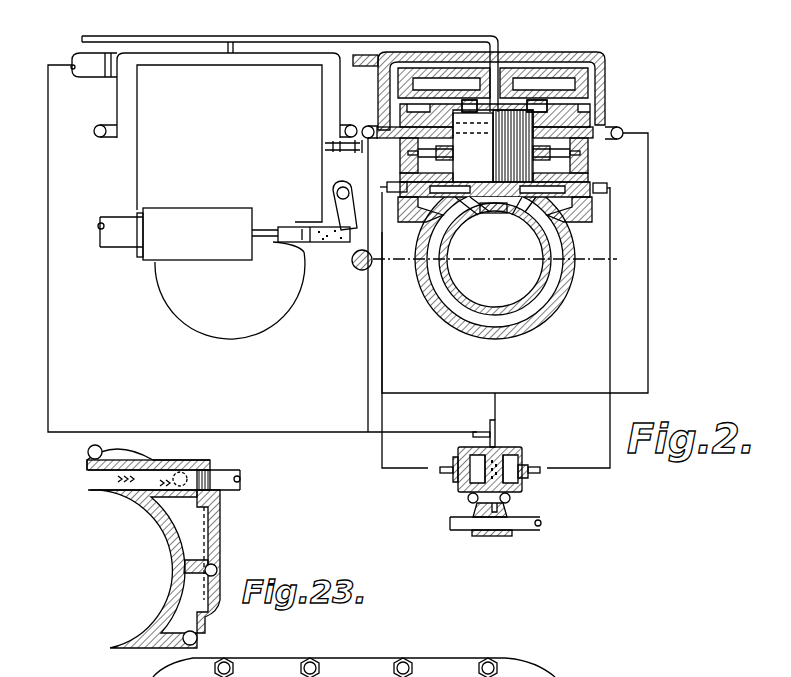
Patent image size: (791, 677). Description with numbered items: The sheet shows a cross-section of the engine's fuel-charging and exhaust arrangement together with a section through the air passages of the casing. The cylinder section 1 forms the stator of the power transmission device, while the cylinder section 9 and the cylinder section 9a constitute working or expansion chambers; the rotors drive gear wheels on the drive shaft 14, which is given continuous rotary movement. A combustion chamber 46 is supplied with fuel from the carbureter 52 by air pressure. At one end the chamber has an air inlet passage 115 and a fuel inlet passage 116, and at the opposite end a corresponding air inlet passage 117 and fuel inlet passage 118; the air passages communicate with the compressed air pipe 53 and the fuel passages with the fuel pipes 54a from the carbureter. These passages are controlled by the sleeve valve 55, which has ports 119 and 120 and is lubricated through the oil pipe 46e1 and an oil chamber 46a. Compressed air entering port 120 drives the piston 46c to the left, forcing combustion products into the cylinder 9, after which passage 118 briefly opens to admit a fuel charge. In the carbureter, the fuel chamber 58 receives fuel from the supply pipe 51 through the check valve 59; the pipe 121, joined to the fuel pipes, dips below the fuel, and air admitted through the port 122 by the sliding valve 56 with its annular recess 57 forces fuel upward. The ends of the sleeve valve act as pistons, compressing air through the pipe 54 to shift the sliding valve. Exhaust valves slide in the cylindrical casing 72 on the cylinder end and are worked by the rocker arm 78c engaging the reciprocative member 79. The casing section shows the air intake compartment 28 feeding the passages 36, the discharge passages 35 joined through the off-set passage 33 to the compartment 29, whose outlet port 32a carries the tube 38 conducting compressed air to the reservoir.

In FIG. 2, the cylinder section 1 is at (501, 260).
In FIG. 2, the cylinder section 9 is at (522, 288).
In FIG. 2, the cylinder section 9a is at (182, 287).
In FIG. 2, the drive shaft 14 is at (354, 269).
In FIG. 23, the air intake compartment 28 is at (557, 675).
In FIG. 23, the compartment 29 is at (140, 487).
In FIG. 23, the outlet port 32a is at (216, 513).
In FIG. 23, the off-set passage 33 is at (207, 537).
In FIG. 23, the air discharge passage 35 is at (185, 590).
In FIG. 23, the passage 36 is at (187, 550).
In FIG. 23, the tube 38 is at (245, 480).
In FIG. 2, the combustion chamber 46 is at (478, 183).
In FIG. 2, the regulator chamber 46a is at (506, 100).
In FIG. 2, the piston 46c is at (497, 153).
In FIG. 2, the pipe 46e1 is at (330, 14).
In FIG. 2, the fuel supply pipe 51 is at (525, 530).
In FIG. 2, the carbureter 52 is at (458, 478).
In FIG. 2, the compressed air pipe 53 is at (48, 65).
In FIG. 2, the pipe 54 is at (611, 405).
In FIG. 2, the fuel pipe 54a is at (384, 362).
In FIG. 2, the sleeve valve 55 is at (582, 187).
In FIG. 2, the sliding valve 56 is at (500, 462).
In FIG. 2, the annular recess 57 is at (495, 458).
In FIG. 2, the fuel chamber 58 is at (510, 500).
In FIG. 2, the check valve 59 is at (487, 534).
In FIG. 2, the cylindrical casing 72 is at (182, 243).
In FIG. 2, the arm 78c is at (335, 209).
In FIG. 2, the reciprocative member 79 is at (305, 265).
In FIG. 2, the air inlet passage 115 is at (390, 100).
In FIG. 2, the fuel inlet passage 116 is at (380, 139).
In FIG. 2, the air inlet passage 117 is at (597, 98).
In FIG. 2, the fuel inlet passage 118 is at (607, 140).
In FIG. 2, the port 119 is at (468, 100).
In FIG. 2, the port 120 is at (540, 100).
In FIG. 2, the pipe 121 is at (496, 400).
In FIG. 2, the port 122 is at (468, 498).